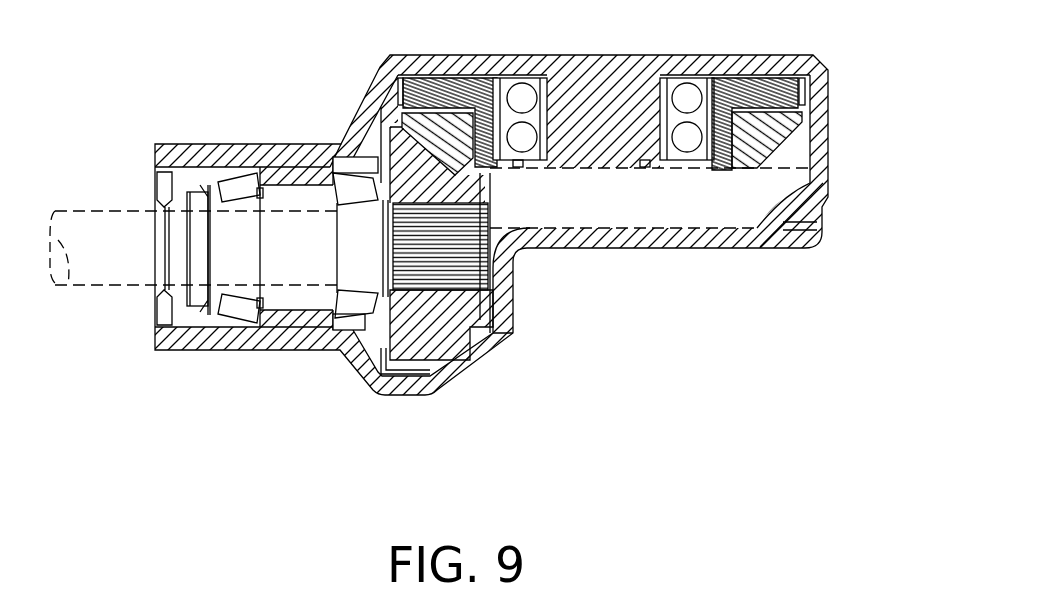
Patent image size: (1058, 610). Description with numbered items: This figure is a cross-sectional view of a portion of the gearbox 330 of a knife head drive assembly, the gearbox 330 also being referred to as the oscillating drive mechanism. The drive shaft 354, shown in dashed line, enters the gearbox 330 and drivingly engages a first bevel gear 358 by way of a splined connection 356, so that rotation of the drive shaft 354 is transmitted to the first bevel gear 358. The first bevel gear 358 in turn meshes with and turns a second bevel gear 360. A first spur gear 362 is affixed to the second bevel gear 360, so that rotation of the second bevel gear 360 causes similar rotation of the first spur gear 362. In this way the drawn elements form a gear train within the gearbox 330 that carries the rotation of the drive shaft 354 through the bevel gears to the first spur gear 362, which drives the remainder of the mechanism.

The oscillating drive mechanism or gearbox 330 is at (491, 225).
The drive shaft 354 is at (128, 211).
The splined connection 356 is at (467, 252).
The first bevel gear 358 is at (432, 325).
The second bevel gear 360 is at (757, 157).
The first spur gear 362 is at (803, 92).